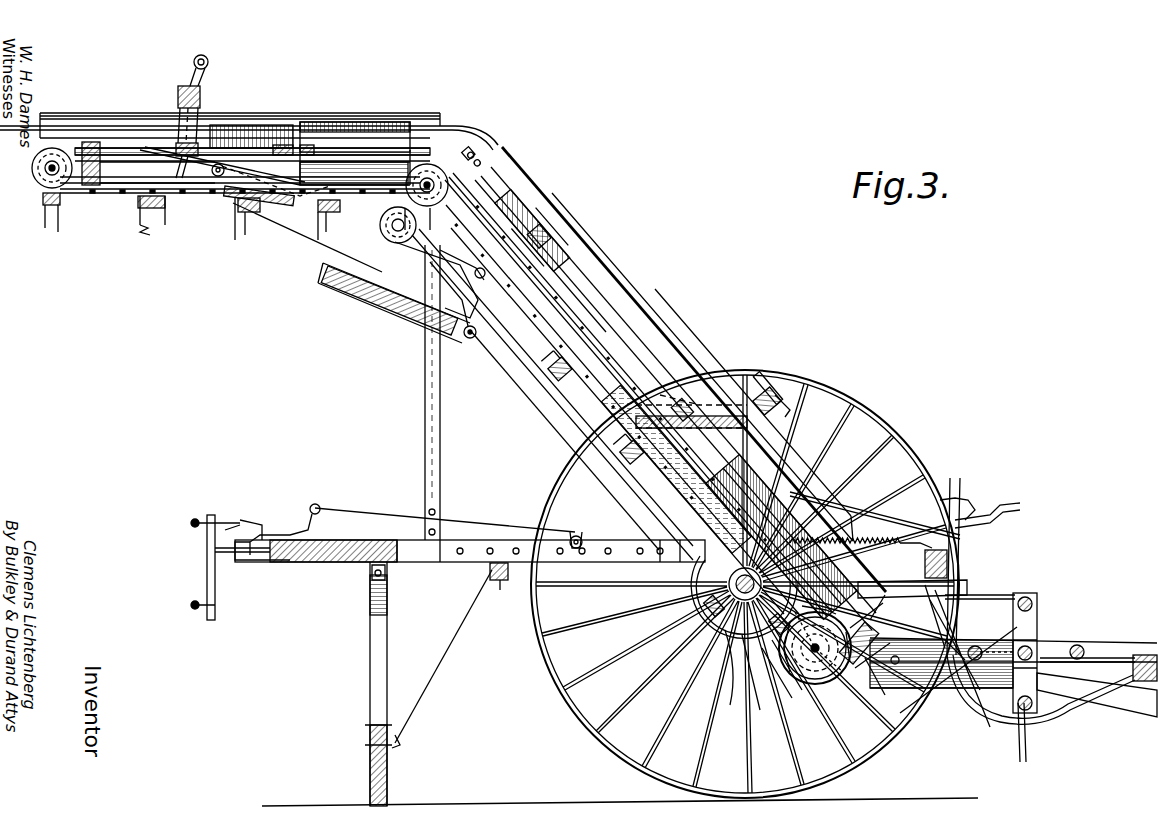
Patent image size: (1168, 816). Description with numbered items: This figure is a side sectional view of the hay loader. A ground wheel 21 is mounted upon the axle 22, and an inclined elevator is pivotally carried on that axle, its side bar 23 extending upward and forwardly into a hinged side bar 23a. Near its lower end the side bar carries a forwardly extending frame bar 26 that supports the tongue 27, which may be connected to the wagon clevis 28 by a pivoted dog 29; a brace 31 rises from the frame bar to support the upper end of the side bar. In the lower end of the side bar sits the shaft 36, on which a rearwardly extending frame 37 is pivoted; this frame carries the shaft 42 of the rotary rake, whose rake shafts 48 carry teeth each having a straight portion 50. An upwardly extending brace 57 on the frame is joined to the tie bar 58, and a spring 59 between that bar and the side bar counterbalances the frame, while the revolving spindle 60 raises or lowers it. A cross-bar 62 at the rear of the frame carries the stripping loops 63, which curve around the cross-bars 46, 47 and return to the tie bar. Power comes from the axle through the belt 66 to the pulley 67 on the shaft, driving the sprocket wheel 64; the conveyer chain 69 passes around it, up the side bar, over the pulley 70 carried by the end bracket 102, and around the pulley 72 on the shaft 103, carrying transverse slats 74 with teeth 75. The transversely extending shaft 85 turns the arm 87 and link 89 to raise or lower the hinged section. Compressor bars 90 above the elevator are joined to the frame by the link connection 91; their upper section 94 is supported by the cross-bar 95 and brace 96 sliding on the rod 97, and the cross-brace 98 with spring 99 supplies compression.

The ground wheel 21 is at (847, 395).
The axle 22 is at (730, 590).
The side bar 23 is at (650, 318).
The hinged side bar 23a is at (282, 122).
The frame bar 26 is at (598, 562).
The tongue 27 is at (325, 565).
The wagon clevis 28 is at (222, 530).
The pivoted dog 29 is at (270, 528).
The brace 31 is at (442, 478).
The shaft 36 is at (775, 695).
The rearwardly extending frame 37 is at (1108, 700).
The shaft of the rotary raking mechanism 42 is at (1058, 628).
The cross-bar 46 is at (1010, 705).
The cross-bar 47 is at (1030, 640).
The rake shaft 48 is at (1032, 602).
The straight portion 50 is at (992, 595).
The brace 57 is at (912, 614).
The tie bar 58 is at (952, 565).
The spring 59 is at (873, 525).
The revolving spindle 60 is at (912, 540).
The cross-bar 62 is at (1143, 656).
The stripping loop 63 is at (1052, 718).
The sprocket wheel 64 is at (862, 682).
The belt 66 is at (739, 679).
The pulley 67 is at (814, 684).
The conveyer chain 69 is at (700, 345).
The pulley 70 is at (430, 165).
The pulley 72 is at (60, 175).
The transverse slat 74 is at (295, 195).
The teeth 75 is at (170, 233).
The transversely extending shaft 85 is at (492, 262).
The arm 87 is at (475, 328).
The link 89 is at (270, 212).
The compressor bar 90 is at (660, 336).
The link connection 91 is at (948, 700).
The upper section 94 is at (50, 135).
The cross-bar 95 is at (200, 110).
The brace 96 is at (200, 90).
The rod 97 is at (208, 62).
The cross-brace 98 is at (772, 405).
The spring 99 is at (742, 400).
The end bracket 102 is at (385, 216).
The shaft 103 is at (62, 208).